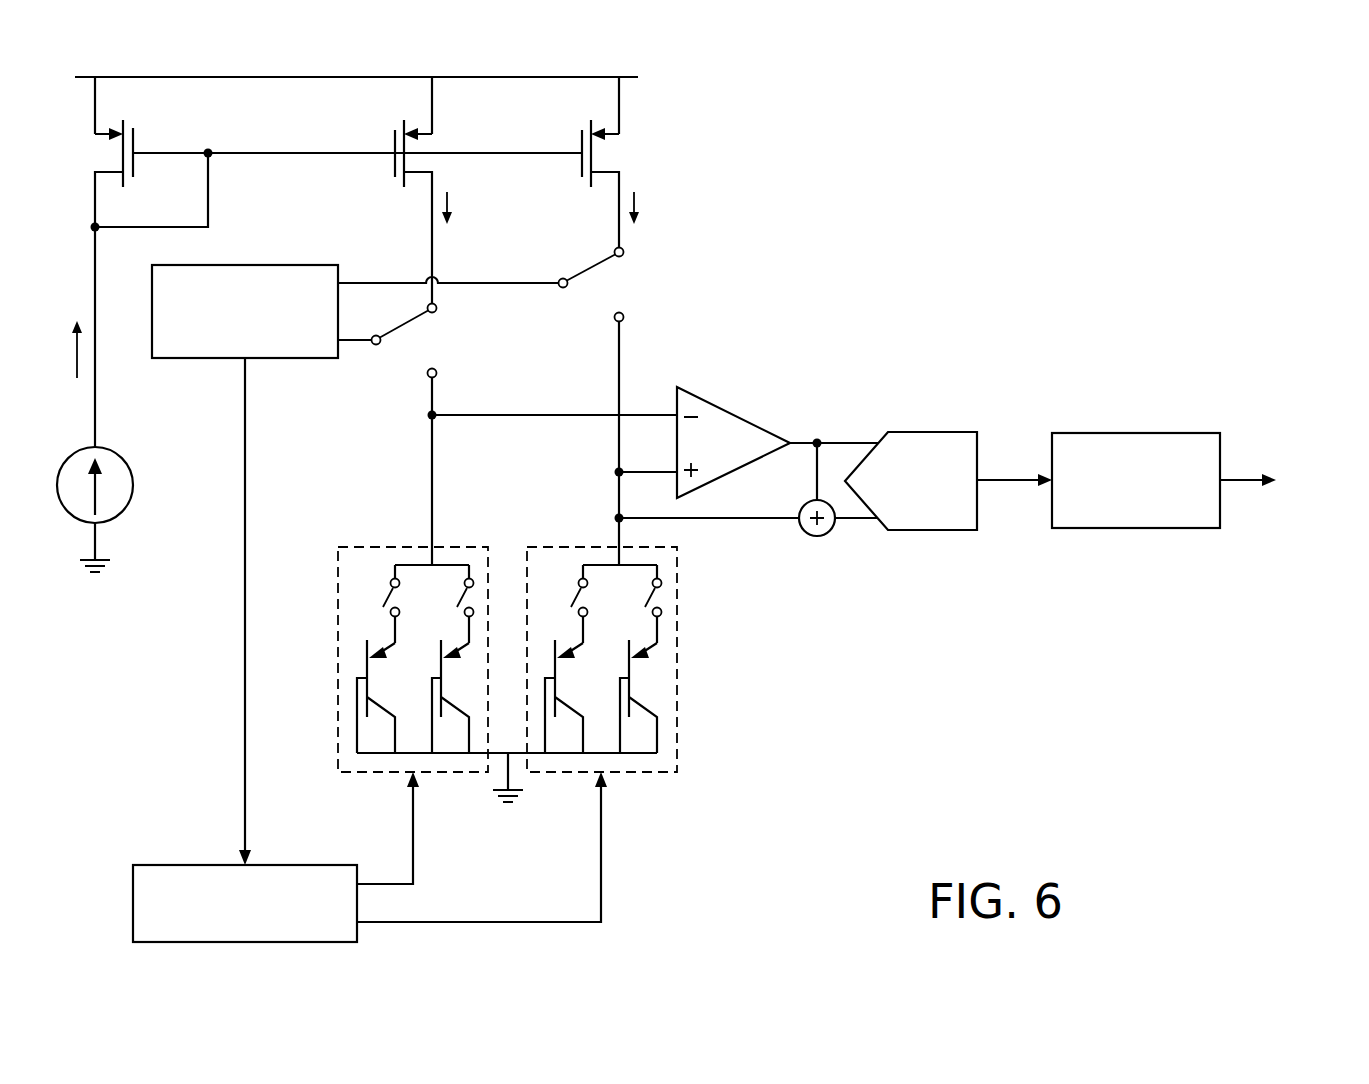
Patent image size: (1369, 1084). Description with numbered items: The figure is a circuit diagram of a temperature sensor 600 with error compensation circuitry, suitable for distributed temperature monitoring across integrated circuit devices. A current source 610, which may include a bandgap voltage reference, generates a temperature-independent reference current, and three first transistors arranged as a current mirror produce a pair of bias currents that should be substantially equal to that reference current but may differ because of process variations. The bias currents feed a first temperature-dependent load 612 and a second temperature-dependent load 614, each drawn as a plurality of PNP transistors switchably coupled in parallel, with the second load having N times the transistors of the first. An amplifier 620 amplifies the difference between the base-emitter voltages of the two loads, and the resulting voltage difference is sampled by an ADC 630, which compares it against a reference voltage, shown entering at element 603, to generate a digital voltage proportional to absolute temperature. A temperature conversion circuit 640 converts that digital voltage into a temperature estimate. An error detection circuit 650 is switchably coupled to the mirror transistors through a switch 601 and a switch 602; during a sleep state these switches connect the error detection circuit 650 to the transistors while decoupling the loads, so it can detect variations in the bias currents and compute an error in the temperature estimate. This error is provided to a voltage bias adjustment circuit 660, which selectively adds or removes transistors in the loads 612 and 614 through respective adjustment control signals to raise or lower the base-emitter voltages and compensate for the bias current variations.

The temperature sensor 600 is at (1256, 106).
The switch 601 is at (418, 322).
The switch 602 is at (600, 265).
The summing node 603 is at (806, 535).
The current source 610 is at (121, 452).
The temperature-dependent load 612 is at (397, 546).
The temperature-dependent load 614 is at (585, 546).
The amplifier 620 is at (711, 454).
The ADC 630 is at (906, 507).
The temperature conversion circuit 640 is at (1117, 506).
The error detection circuit 650 is at (226, 339).
The voltage bias adjustment circuit 660 is at (226, 931).